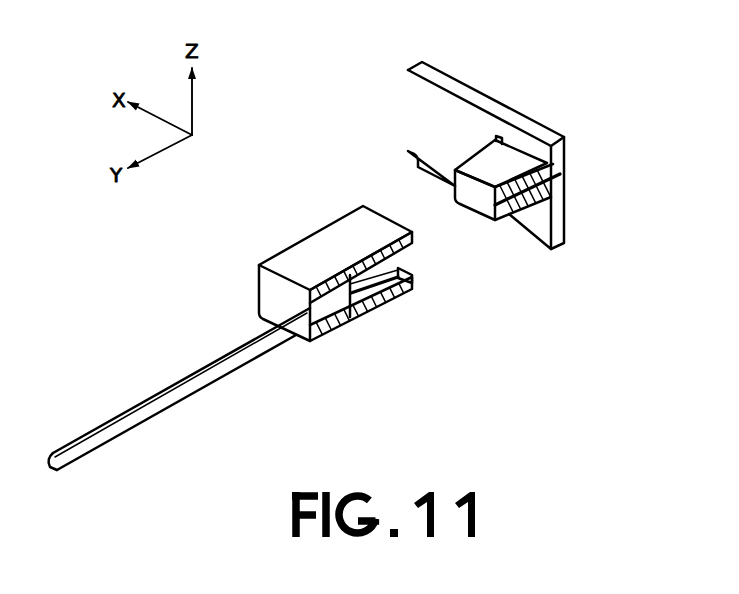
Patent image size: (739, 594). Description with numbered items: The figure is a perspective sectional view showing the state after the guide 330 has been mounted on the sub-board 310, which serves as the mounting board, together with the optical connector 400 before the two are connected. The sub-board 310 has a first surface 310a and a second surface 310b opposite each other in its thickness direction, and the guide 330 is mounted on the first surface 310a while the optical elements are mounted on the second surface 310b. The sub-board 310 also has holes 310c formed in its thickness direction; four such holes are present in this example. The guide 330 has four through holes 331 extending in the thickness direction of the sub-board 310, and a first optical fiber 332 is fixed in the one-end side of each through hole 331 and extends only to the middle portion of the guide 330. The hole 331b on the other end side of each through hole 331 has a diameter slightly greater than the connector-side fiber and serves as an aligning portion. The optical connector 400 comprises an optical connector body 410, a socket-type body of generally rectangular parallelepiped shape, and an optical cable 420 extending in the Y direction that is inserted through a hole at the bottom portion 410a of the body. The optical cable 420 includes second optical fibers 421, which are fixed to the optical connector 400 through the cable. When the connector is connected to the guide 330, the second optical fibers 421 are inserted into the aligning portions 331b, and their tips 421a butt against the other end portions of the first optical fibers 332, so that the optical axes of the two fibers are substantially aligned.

The sub-board 310 is at (488, 137).
The first surface 310a is at (416, 91).
The second surface 310b is at (517, 120).
The hole 310c is at (552, 182).
The guide 330 is at (485, 212).
The through hole 331 is at (434, 186).
The hole on the other end side 331b is at (470, 195).
The first optical fiber 332 is at (551, 197).
The optical connector 400 is at (271, 331).
The optical connector body 410 is at (287, 264).
The bottom portion 410a is at (265, 295).
The optical cable 420 is at (167, 408).
The second optical fiber 421 is at (422, 325).
The tip 421a is at (413, 282).